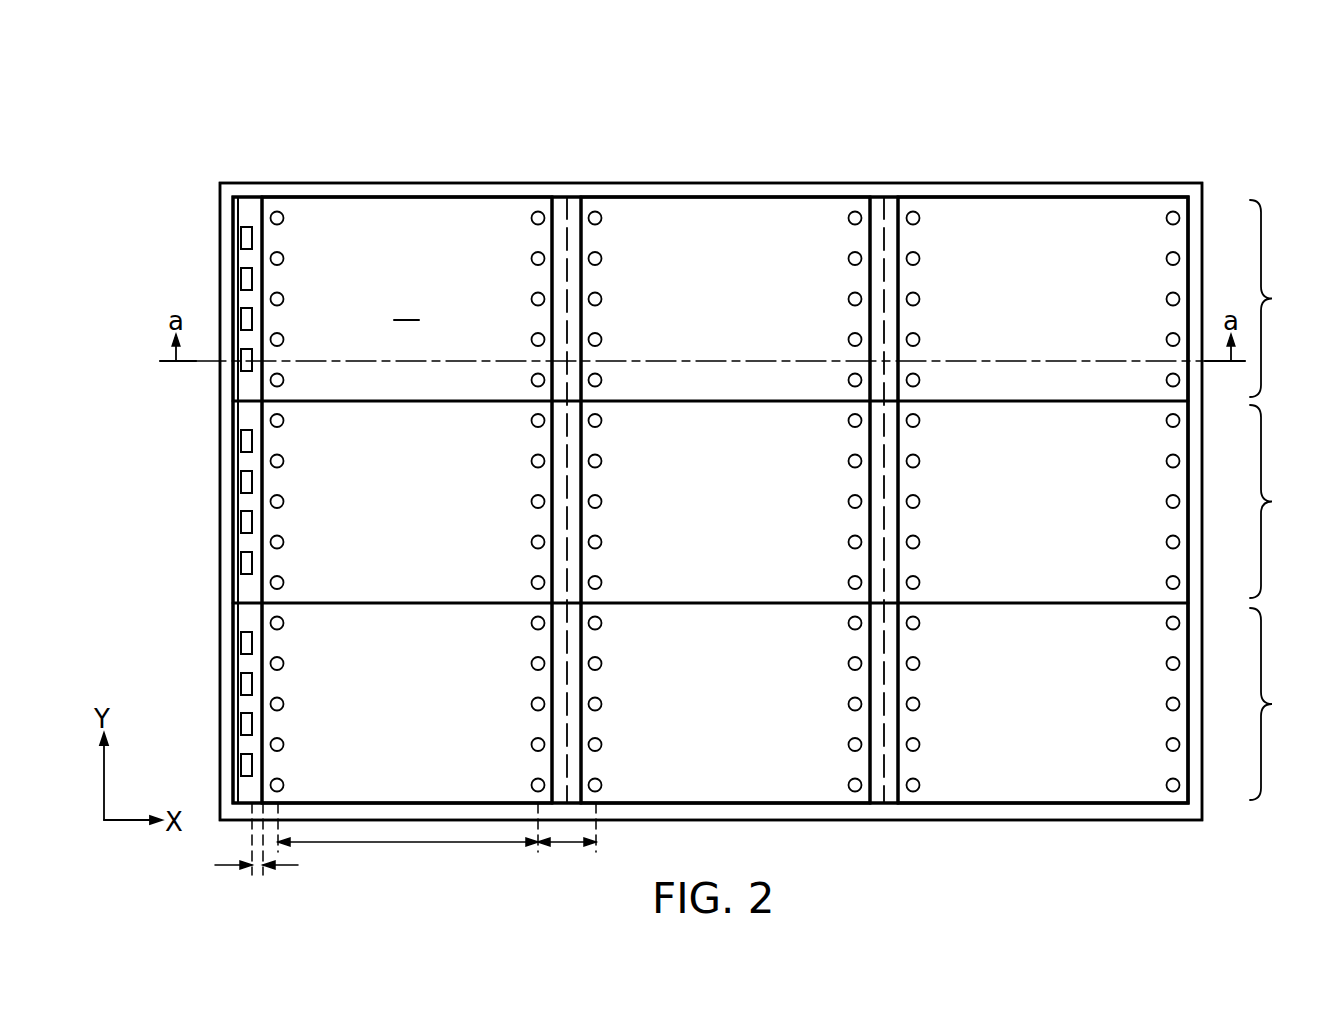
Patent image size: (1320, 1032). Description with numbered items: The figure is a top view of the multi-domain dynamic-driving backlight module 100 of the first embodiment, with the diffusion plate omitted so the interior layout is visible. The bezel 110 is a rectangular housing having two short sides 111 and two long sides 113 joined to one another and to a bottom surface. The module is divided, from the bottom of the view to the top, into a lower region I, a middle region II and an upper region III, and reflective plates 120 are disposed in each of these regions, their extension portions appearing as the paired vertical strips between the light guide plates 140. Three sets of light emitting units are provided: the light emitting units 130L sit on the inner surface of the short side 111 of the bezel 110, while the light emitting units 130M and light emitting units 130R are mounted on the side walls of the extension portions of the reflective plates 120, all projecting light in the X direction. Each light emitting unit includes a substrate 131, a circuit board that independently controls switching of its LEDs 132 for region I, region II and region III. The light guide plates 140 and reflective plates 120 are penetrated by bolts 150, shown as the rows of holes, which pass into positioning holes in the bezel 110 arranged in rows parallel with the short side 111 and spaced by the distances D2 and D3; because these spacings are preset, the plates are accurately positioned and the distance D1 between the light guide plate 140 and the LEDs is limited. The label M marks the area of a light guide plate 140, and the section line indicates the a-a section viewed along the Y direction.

The multi-domain dynamic-driving backlight module 100 is at (186, 113).
The bezel 110 is at (218, 450).
The short side 111 is at (231, 508).
The long side 113 is at (1145, 190).
The reflective plate 120 is at (575, 248).
The light emitting unit 130L is at (93, 215).
The light emitting unit 130M is at (559, 223).
The light emitting unit 130R is at (878, 223).
The substrate 131 is at (241, 257).
The LED 132 is at (241, 323).
The light guide plate 140 is at (405, 214).
The bolt 150 is at (281, 212).
The mother board region M is at (406, 306).
The distance D1 is at (256, 885).
The distance D2 is at (408, 862).
The distance D3 is at (567, 862).
The lower region I is at (1270, 704).
The middle region II is at (1272, 501).
The upper region III is at (1275, 298).